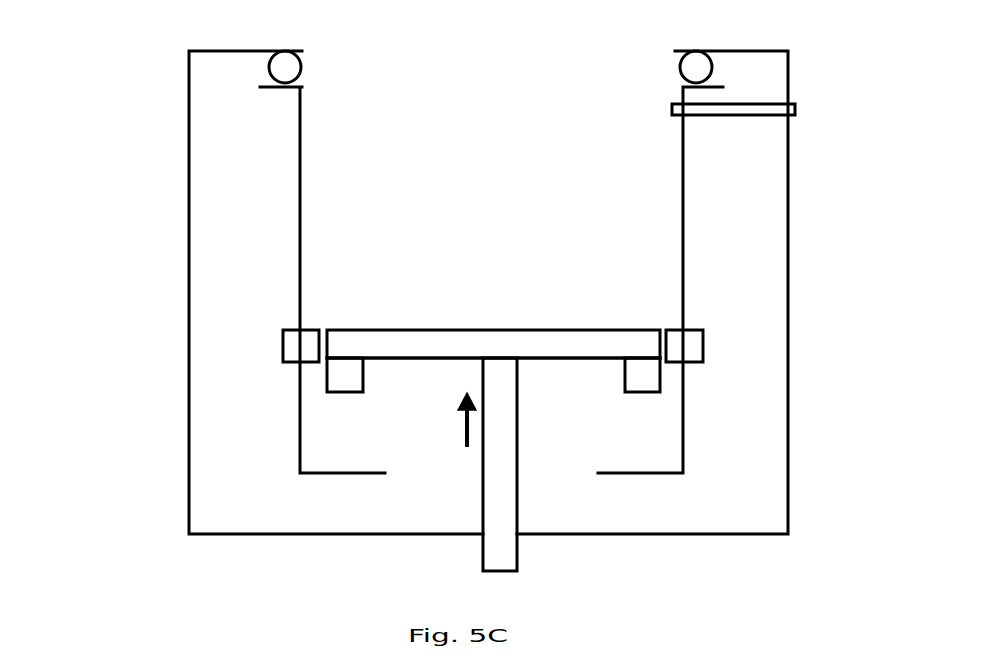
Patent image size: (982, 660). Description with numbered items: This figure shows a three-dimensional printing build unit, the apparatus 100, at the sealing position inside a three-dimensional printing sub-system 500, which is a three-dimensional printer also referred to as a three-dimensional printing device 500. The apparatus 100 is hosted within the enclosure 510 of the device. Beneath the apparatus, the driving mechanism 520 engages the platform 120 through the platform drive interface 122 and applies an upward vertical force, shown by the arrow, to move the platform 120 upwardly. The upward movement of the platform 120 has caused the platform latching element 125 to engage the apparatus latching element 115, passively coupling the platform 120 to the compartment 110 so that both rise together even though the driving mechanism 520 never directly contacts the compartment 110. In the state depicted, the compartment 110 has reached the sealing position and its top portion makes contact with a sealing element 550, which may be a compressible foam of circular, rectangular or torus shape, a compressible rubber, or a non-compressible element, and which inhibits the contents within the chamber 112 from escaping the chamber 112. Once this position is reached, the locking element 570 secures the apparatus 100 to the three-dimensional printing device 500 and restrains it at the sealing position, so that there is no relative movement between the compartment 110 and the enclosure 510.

The 3D printing sub-system 500 is at (136, 78).
The apparatus 100 is at (266, 124).
The compartment 110 is at (300, 167).
The chamber 112 is at (500, 208).
The apparatus latching element 115 is at (283, 345).
The platform 120 is at (562, 330).
The platform drive interface 122 is at (500, 360).
The platform latching element 125 is at (333, 392).
The enclosure 510 is at (790, 290).
The driving mechanism 520 is at (502, 573).
The sealing element 550 is at (302, 67).
The locking element 570 is at (795, 111).